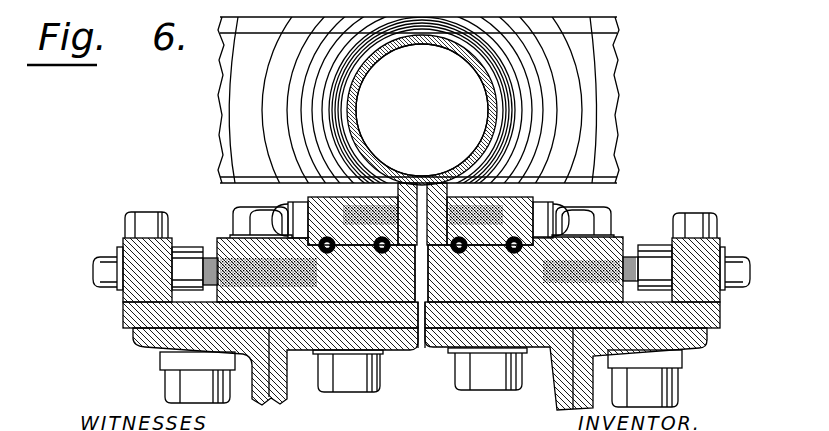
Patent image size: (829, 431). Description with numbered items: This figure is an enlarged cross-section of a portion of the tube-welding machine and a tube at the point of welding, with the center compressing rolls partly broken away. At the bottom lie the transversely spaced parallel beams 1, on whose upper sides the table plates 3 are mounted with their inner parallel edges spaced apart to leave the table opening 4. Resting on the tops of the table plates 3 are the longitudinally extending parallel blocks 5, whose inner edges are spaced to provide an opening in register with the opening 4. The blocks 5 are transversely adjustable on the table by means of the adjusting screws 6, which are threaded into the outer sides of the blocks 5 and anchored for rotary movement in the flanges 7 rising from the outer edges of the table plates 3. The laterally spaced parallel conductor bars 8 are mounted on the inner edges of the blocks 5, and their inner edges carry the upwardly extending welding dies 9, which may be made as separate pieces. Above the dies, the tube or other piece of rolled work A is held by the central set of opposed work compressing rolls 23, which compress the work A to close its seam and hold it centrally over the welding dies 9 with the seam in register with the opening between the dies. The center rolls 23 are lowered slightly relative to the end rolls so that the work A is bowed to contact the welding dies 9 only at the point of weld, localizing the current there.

The beam 1 is at (280, 398).
The table plate 3 is at (125, 317).
The table opening 4 is at (423, 334).
The block 5 is at (441, 279).
The adjusting screw 6 is at (213, 257).
The flange 7 is at (125, 240).
The conductor bar 8 is at (323, 199).
The welding die 9 is at (437, 175).
The central work compressing roll 23 is at (418, 135).
The work A is at (453, 52).